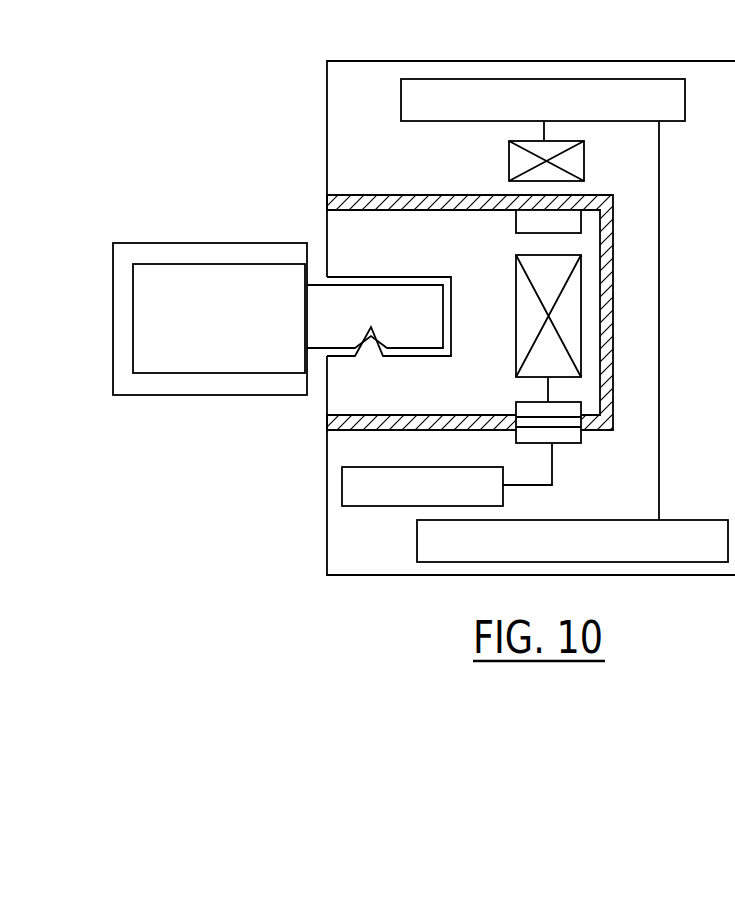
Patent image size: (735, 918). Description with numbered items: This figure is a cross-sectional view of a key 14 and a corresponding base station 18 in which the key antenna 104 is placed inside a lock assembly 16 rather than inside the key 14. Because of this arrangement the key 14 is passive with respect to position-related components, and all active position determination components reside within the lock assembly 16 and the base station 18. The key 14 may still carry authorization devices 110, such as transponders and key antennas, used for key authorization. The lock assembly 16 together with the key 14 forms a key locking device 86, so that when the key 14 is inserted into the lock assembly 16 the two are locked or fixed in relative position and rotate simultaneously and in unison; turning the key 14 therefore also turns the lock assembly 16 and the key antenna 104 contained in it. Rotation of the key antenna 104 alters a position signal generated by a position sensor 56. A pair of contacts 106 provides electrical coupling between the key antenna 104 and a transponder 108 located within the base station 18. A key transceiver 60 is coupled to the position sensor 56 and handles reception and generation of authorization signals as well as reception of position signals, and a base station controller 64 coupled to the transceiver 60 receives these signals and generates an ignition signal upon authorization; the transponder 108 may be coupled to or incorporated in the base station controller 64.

The base station 18 is at (577, 61).
The key transceiver 60 is at (401, 100).
The position sensor 56 is at (509, 162).
The lock assembly 16 is at (610, 223).
The key antenna 104 is at (581, 315).
The pair of contacts 106 is at (583, 408).
The key 14 is at (190, 243).
The authorization devices 110 is at (195, 373).
The key locking device 86 is at (371, 360).
The transponder 108 is at (422, 514).
The base station controller 64 is at (700, 520).